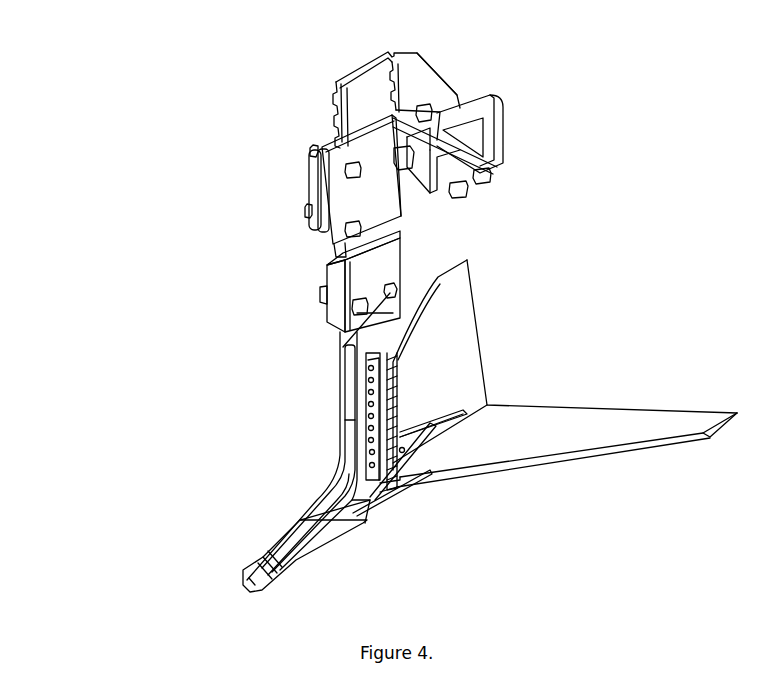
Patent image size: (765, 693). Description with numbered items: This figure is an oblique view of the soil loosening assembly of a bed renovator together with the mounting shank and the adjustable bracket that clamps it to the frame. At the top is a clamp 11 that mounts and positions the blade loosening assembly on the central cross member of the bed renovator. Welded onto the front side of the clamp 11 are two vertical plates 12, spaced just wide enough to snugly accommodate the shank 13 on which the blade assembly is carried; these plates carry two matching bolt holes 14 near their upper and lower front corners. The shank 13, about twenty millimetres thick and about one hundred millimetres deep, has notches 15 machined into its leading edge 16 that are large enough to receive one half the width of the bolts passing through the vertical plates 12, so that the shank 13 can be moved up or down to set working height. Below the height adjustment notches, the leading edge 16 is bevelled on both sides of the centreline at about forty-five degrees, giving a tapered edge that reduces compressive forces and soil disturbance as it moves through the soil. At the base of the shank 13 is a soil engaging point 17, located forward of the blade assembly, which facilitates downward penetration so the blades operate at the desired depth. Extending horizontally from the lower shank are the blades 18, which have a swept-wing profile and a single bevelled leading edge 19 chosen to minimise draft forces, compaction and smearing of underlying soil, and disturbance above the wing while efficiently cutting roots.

The clamp 11 is at (411, 86).
The vertical plates 12 is at (311, 187).
The shank 13 is at (318, 312).
The bolt holes 14 is at (311, 142).
The notches 15 is at (330, 105).
The leading edge 16 is at (339, 388).
The soil engaging point 17 is at (260, 588).
The blades 18 is at (474, 459).
The single bevelled leading edge 19 is at (590, 473).